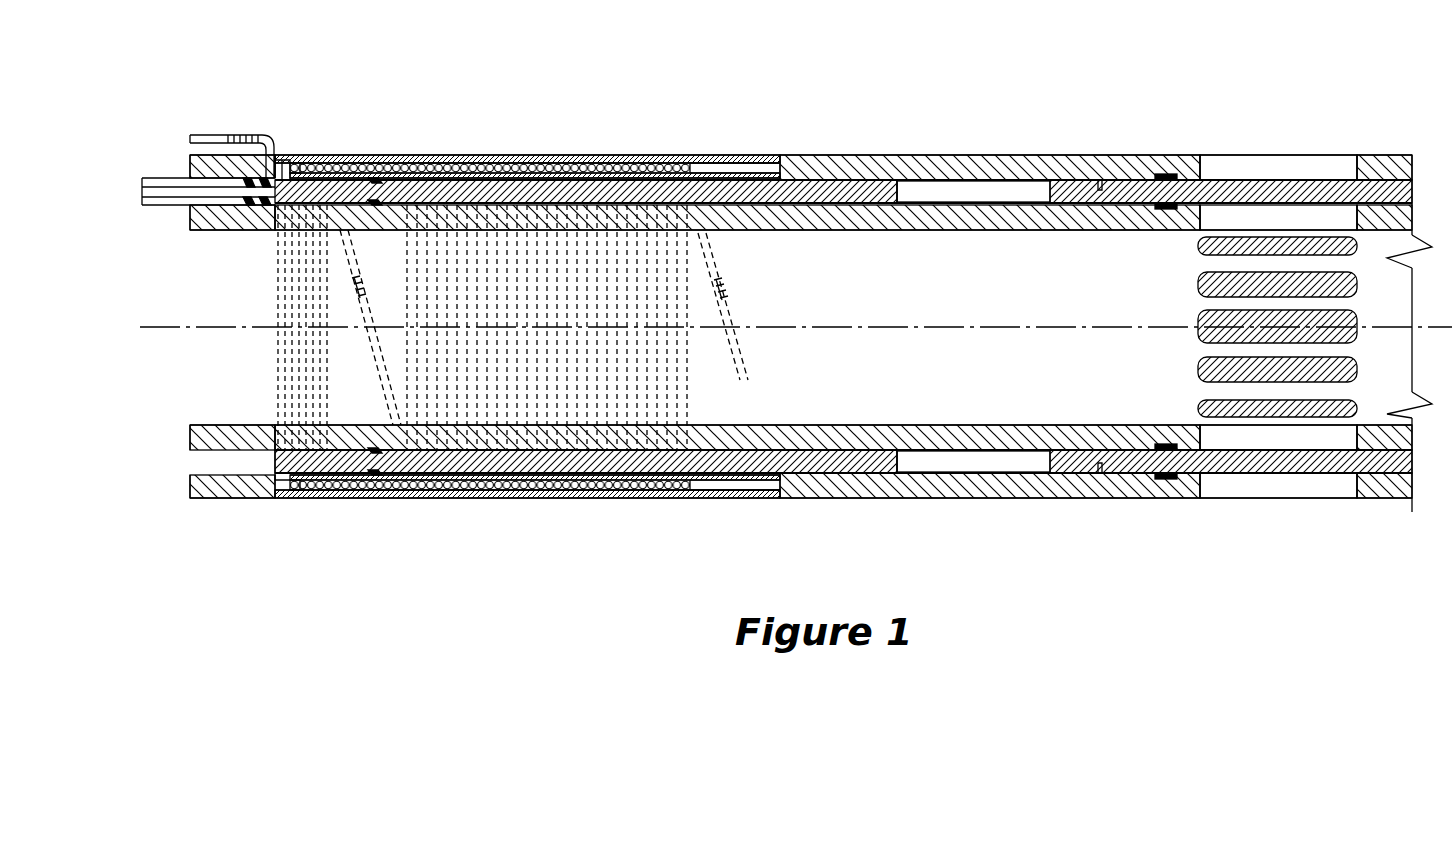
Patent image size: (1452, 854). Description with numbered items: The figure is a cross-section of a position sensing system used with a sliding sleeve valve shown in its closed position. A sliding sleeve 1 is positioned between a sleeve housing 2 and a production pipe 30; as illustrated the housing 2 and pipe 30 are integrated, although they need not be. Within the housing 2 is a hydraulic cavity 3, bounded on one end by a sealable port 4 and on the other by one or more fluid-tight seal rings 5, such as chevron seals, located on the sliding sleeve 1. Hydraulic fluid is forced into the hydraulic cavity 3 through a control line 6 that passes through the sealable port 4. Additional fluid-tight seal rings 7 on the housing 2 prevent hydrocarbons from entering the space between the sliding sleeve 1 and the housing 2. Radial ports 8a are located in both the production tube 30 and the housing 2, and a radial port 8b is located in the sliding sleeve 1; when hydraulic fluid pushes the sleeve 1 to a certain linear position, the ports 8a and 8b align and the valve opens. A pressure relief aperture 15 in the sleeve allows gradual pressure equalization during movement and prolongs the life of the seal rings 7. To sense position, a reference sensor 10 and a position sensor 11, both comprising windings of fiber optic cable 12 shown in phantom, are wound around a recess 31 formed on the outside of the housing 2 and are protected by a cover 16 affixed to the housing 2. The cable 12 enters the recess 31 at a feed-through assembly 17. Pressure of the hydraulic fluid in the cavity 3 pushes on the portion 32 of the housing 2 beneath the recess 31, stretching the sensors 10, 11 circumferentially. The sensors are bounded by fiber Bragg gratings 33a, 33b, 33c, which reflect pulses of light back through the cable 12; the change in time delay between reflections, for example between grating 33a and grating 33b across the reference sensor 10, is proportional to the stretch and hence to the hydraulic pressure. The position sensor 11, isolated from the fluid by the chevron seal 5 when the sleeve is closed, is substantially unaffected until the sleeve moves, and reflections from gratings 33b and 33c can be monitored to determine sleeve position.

The sliding sleeve 1 is at (866, 192).
The sleeve housing 2 is at (812, 165).
The hydraulic cavity 3 is at (350, 162).
The sealable port 4 is at (262, 207).
The fluid-tight seal rings 5 is at (388, 172).
The control line 6 is at (163, 187).
The fluid-tight seal rings 7 is at (1166, 176).
The radial ports 8a is at (1272, 168).
The radial port 8b is at (978, 190).
The reference sensor 10 is at (318, 157).
The position sensor 11 is at (636, 168).
The fiber optic cable 12 is at (198, 134).
The pressure relief aperture 15 is at (1100, 183).
The cover 16 is at (698, 176).
The feed-through assembly 17 is at (285, 157).
The production pipe 30 is at (925, 217).
The recess 31 is at (758, 180).
The portion 32 is at (528, 160).
The fiber Bragg grating 33a is at (243, 134).
The fiber Bragg grating 33b is at (374, 290).
The fiber Bragg grating 33c is at (736, 290).